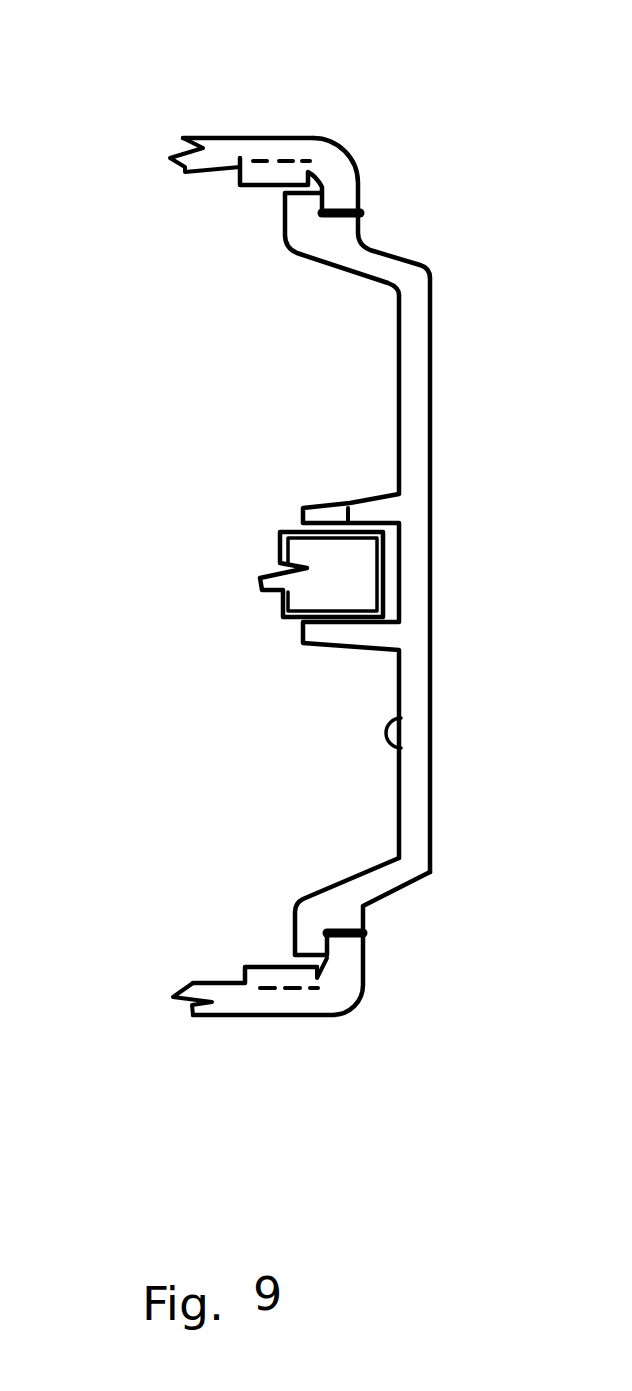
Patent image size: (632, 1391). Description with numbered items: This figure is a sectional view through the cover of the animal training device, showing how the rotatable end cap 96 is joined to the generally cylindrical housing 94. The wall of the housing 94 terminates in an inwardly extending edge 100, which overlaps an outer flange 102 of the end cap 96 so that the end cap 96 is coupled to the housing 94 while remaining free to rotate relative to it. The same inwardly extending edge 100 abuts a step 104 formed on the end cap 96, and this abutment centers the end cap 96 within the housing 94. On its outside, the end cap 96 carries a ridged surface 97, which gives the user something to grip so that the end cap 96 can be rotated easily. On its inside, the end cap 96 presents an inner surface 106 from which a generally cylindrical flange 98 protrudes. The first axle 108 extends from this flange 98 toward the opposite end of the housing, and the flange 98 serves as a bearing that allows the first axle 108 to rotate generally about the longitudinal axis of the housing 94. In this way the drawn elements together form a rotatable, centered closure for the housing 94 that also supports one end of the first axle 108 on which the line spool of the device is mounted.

The housing 94 is at (252, 128).
The end cap 96 is at (404, 340).
The ridged surface 97 is at (395, 893).
The generally cylindrical flange 98 is at (350, 518).
The inwardly extending edge 100 is at (343, 190).
The outer flange 102 is at (302, 203).
The step 104 is at (357, 212).
The inner surface 106 is at (401, 750).
The first axle 108 is at (350, 587).